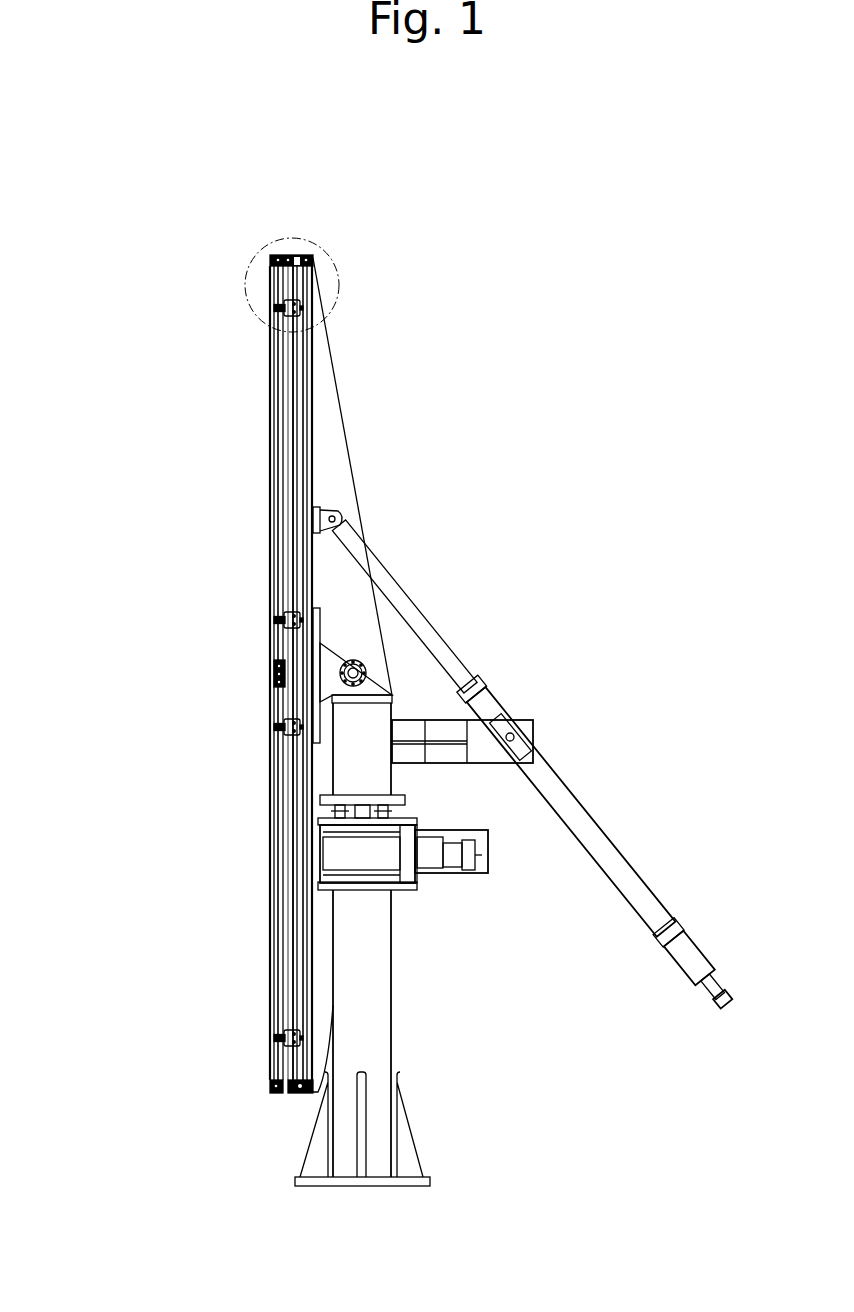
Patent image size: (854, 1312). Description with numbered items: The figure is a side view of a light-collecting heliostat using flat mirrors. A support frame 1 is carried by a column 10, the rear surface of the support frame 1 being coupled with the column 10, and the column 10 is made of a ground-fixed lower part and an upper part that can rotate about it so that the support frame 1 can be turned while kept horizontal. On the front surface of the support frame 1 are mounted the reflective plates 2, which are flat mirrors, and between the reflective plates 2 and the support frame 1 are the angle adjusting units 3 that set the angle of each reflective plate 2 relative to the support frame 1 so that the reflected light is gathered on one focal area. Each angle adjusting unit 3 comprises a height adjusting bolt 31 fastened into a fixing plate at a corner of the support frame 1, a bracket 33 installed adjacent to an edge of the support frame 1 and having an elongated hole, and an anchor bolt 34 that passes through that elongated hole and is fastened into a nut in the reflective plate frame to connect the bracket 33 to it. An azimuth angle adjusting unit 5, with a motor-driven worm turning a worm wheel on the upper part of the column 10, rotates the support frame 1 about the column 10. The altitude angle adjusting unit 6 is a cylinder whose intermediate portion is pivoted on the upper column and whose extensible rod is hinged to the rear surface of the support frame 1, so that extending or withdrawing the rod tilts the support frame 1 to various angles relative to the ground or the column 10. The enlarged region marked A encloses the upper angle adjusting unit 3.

The support frame 1 is at (374, 663).
The reflective plates 2 is at (246, 674).
The angle adjusting unit 3 is at (171, 236).
The height adjusting bolt 31 is at (283, 262).
The bracket 33 is at (282, 331).
The anchor bolt 34 is at (300, 297).
The azimuth angle adjusting unit 5 is at (437, 887).
The altitude angle adjusting unit 6 is at (583, 790).
The column 10 is at (412, 722).
The detail area A is at (317, 243).